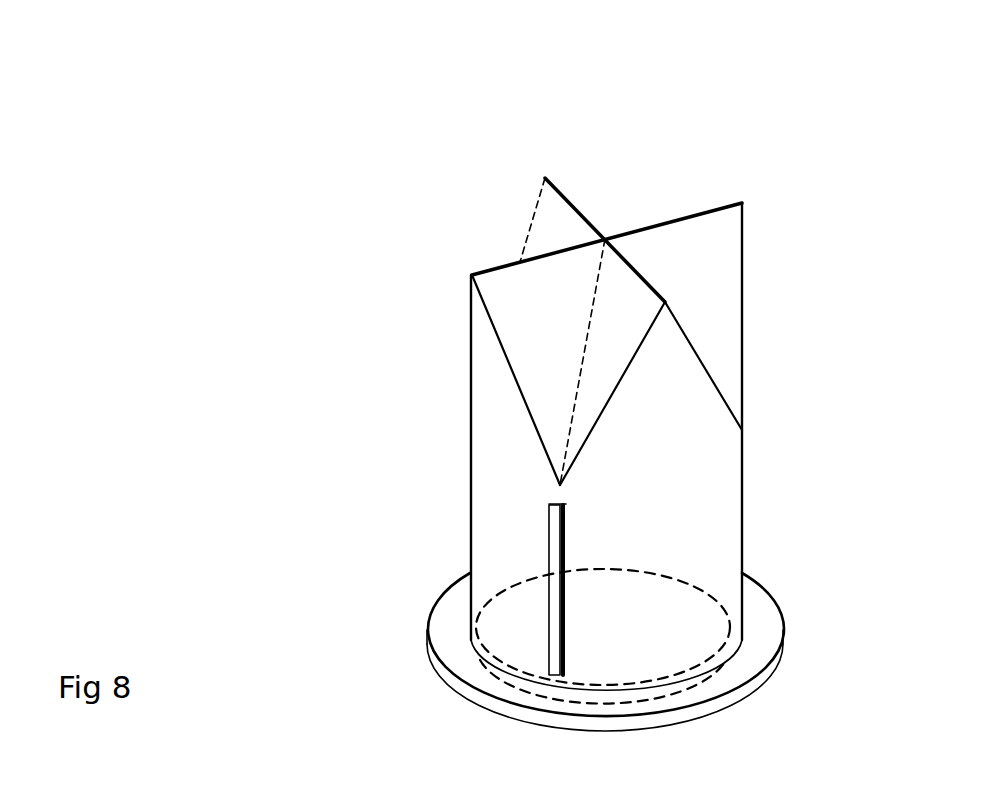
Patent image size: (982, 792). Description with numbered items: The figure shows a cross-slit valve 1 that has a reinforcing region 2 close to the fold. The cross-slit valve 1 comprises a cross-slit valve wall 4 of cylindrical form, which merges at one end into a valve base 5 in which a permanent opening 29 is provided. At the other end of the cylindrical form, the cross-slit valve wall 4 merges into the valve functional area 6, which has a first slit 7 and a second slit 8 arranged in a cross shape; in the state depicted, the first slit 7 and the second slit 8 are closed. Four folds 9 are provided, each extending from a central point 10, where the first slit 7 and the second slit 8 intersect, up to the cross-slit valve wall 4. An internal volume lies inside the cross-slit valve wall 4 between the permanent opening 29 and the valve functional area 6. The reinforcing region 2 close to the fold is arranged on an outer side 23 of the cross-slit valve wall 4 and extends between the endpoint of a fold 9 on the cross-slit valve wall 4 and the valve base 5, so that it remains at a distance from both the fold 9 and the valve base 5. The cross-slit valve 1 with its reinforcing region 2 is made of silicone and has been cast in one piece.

The cross-slit valve 1 is at (517, 158).
The reinforcing region close to the fold 2 is at (512, 586).
The cross-slit valve wall 4 is at (553, 583).
The valve base 5 is at (447, 625).
The valve functional area 6 is at (232, 283).
The first slit 7 is at (680, 220).
The second slit 8 is at (637, 270).
The fold 9 is at (575, 367).
The central point 10 is at (602, 237).
The outer side 23 is at (470, 455).
The permanent opening 29 is at (527, 671).